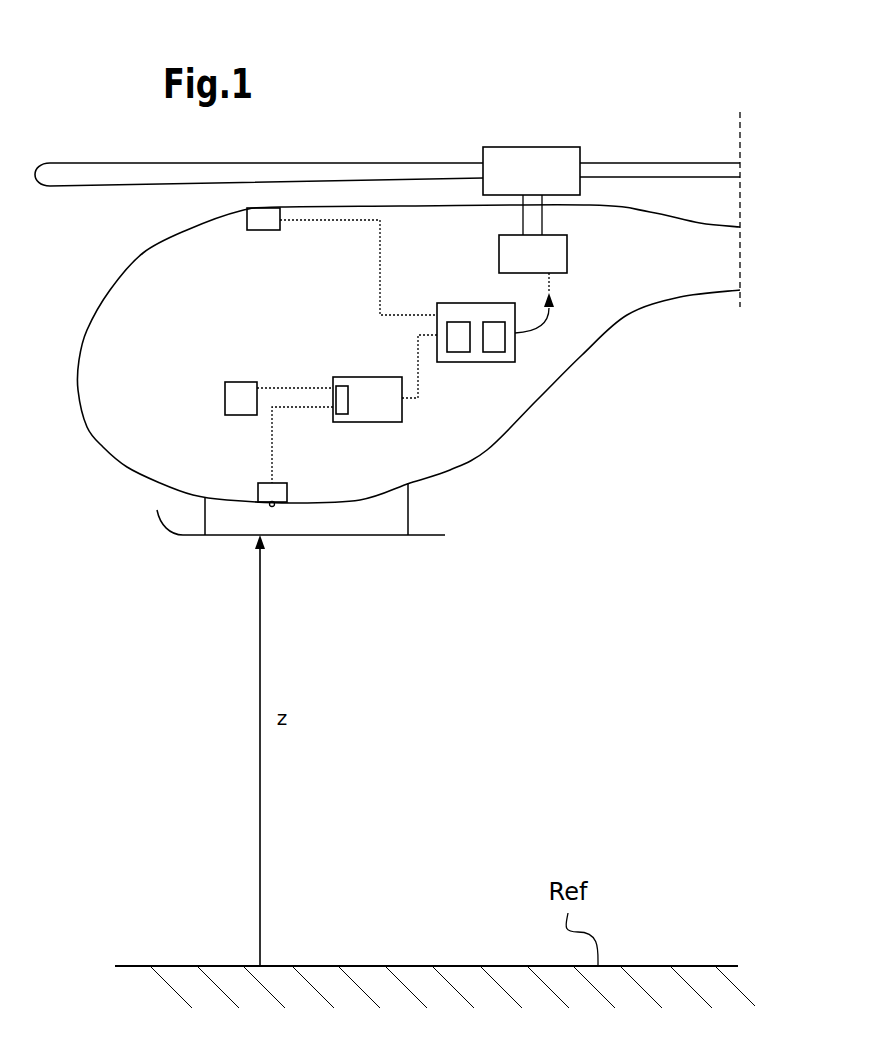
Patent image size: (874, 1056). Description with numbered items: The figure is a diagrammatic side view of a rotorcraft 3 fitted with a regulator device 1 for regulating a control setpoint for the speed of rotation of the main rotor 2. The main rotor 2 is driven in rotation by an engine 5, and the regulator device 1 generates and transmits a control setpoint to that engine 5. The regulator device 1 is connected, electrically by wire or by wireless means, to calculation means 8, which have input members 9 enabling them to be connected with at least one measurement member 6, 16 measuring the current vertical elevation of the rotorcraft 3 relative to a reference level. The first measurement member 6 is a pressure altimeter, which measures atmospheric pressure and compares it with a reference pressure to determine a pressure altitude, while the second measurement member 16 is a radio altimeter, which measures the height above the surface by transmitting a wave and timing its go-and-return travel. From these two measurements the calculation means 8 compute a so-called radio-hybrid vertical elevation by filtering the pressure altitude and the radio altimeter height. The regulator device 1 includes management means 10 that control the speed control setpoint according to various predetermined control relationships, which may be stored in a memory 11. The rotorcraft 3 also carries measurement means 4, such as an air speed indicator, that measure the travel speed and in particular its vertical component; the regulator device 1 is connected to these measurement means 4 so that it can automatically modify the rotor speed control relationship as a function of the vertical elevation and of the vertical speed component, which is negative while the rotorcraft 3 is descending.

The regulator device 1 is at (507, 365).
The main rotor 2 is at (562, 138).
The rotorcraft 3 is at (100, 260).
The measurement means 4 is at (271, 231).
The engine 5 is at (567, 243).
The first measurement member 6 is at (243, 382).
The calculation means 8 is at (375, 377).
The input members 9 is at (343, 378).
The management means 10 is at (455, 352).
The memory 11 is at (493, 352).
The second measurement member 16 is at (258, 492).